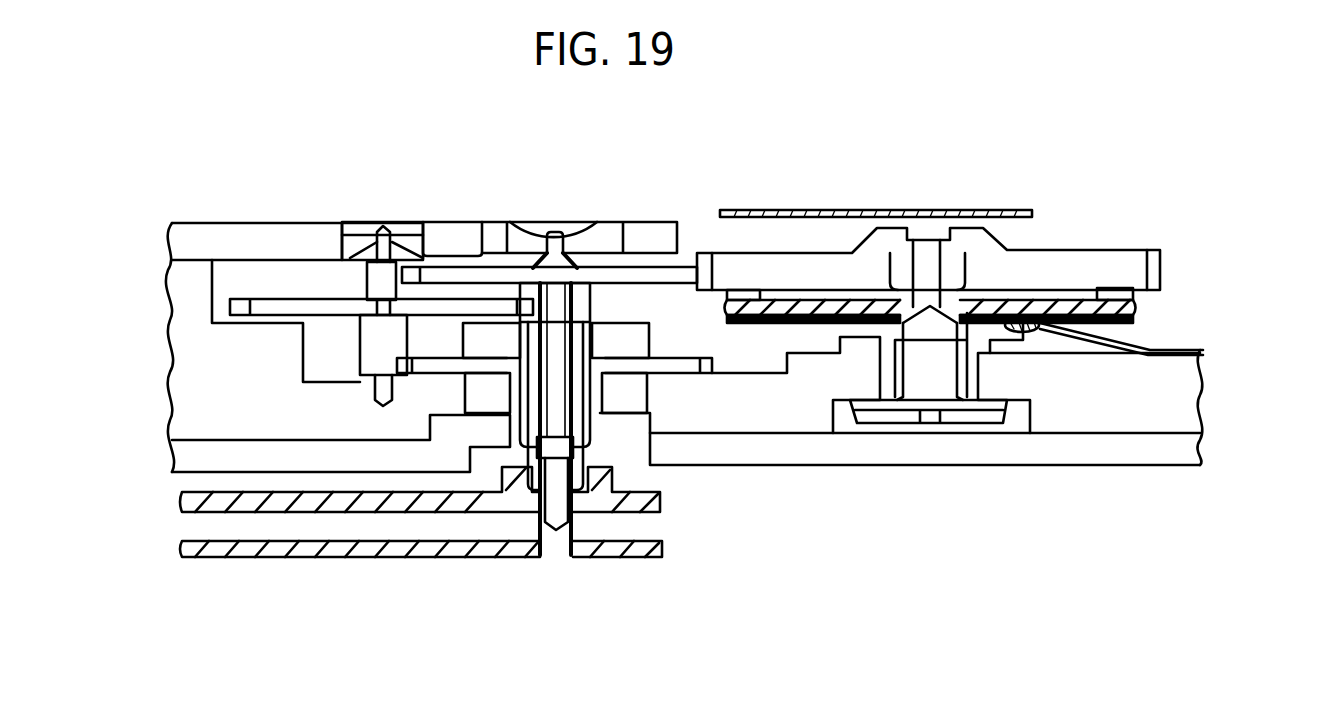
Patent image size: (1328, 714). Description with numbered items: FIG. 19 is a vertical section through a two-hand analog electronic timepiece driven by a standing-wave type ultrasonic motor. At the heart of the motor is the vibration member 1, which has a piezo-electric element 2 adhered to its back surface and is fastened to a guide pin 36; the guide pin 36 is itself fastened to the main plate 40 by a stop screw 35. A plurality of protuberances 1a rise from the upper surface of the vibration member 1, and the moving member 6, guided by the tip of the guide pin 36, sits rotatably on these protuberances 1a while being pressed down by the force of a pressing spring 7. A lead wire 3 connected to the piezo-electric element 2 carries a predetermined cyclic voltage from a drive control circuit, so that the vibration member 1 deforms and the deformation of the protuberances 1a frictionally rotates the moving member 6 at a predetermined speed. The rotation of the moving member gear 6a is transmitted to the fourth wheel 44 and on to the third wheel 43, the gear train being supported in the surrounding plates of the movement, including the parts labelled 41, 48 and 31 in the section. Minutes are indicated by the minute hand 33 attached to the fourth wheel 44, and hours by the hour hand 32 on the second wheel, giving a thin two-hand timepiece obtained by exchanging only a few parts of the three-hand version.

The frame 41 is at (180, 240).
The third wheel 43 is at (380, 285).
The guide bar 48 is at (437, 345).
The fourth wheel 44 is at (640, 278).
The hour hand 32 is at (187, 498).
The minute hand 33 is at (187, 550).
The pressing spring 7 is at (973, 210).
The moving member 6 is at (1073, 262).
The moving member gear 6a is at (1155, 262).
The protuberances 1a is at (1135, 288).
The vibration member 1 is at (1135, 310).
The piezo-electric element 2 is at (1140, 320).
The lead wire 3 is at (1203, 350).
The main plate 40 is at (1190, 402).
The base plate 31 is at (1137, 452).
The guide pin 36 is at (880, 338).
The stop screw 35 is at (933, 390).